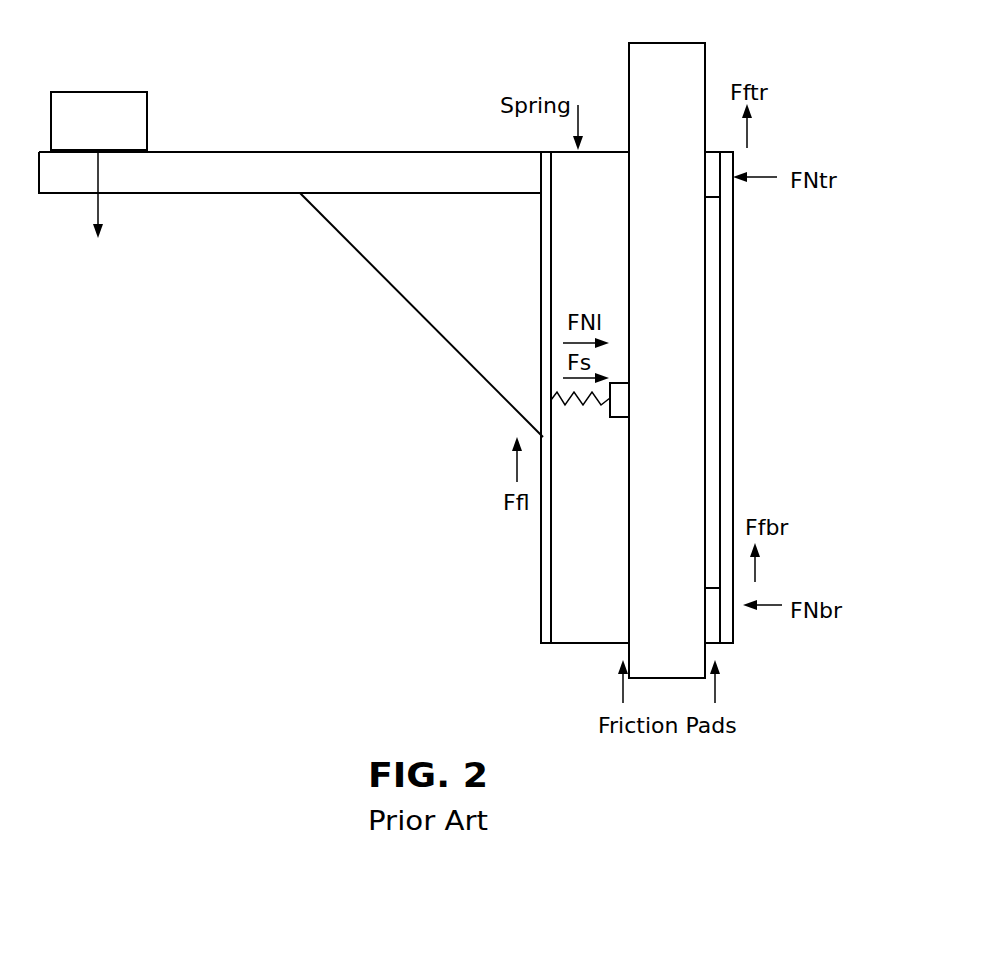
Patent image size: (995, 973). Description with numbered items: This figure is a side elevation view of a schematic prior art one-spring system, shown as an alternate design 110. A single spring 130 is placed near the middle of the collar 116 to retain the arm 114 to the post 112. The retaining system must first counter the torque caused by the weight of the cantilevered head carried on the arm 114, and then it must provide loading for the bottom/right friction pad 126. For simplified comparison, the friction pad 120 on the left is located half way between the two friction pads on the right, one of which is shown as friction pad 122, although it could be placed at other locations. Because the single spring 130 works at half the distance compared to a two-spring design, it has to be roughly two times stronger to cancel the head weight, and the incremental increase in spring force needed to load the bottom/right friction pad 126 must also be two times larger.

The alternate design 110 is at (272, 472).
The post 112 is at (690, 65).
The arm 114 is at (168, 194).
The collar 116 is at (727, 397).
The friction pad 120 is at (620, 407).
The upper friction pad 122 is at (710, 165).
The bottom/right friction pad 126 is at (713, 618).
The single spring 130 is at (557, 398).